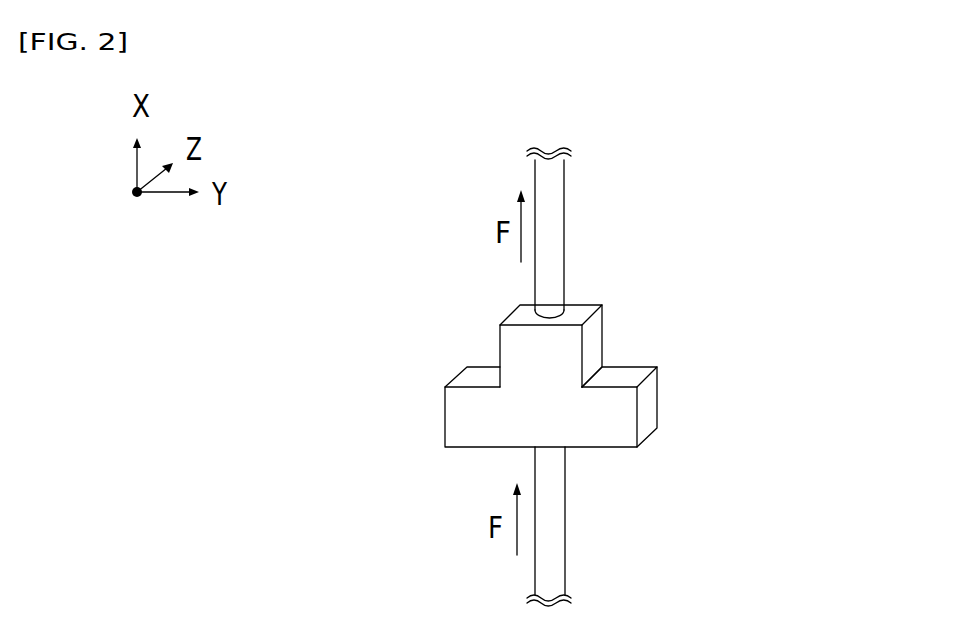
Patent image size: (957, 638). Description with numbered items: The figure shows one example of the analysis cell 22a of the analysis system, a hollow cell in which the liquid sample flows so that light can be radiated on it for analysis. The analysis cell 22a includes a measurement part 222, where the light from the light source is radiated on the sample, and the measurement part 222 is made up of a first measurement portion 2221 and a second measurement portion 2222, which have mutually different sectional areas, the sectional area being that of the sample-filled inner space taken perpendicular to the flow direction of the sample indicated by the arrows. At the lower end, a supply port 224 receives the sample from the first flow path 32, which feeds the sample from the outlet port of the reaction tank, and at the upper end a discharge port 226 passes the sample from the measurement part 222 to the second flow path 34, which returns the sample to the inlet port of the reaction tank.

The second flow path 34 is at (565, 198).
The first flow path 32 is at (566, 558).
The measurement part 222 is at (613, 366).
The first measurement portion 2221 is at (593, 347).
The second measurement portion 2222 is at (653, 407).
The discharge port 226 is at (568, 307).
The supply port 224 is at (566, 448).
The analysis cell 22a is at (442, 370).